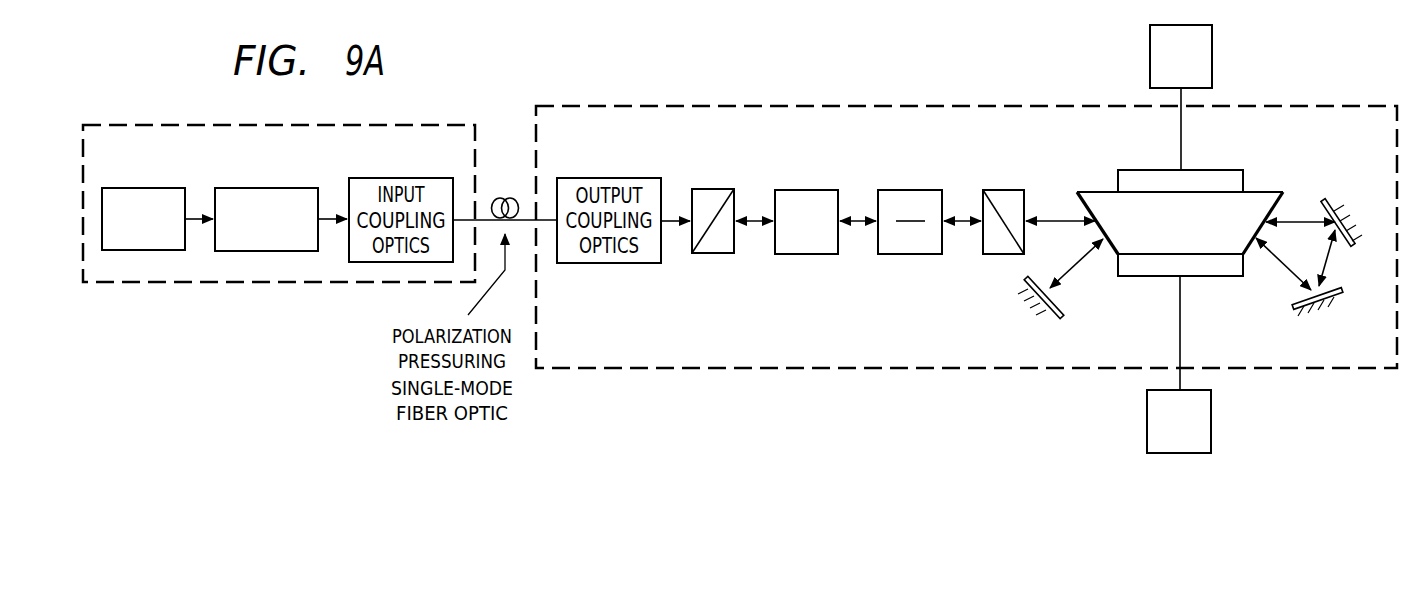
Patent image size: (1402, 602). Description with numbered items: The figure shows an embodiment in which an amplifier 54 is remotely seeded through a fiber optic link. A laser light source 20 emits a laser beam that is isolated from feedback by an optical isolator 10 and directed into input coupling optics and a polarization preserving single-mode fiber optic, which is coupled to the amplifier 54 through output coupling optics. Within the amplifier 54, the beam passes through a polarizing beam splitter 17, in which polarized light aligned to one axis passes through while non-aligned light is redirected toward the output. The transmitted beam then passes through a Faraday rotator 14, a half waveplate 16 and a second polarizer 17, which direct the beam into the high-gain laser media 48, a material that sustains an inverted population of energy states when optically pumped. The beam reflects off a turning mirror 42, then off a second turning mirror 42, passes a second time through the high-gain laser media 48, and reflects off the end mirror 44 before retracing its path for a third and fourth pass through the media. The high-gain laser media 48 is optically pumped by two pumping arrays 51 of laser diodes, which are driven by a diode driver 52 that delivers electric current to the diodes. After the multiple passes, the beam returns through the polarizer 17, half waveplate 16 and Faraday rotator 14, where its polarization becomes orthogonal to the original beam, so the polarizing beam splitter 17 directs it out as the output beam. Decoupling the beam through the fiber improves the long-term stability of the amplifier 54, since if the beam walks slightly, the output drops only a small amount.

The laser light source 20 is at (138, 187).
The optical isolator 10 is at (267, 187).
The polarizing beam splitter 17 is at (707, 188).
The Faraday rotator 14 is at (800, 190).
The half waveplate 16 is at (913, 190).
The amplifier 54 is at (967, 105).
The high-gain laser media 48 is at (1168, 234).
The pumping arrays 51 is at (1225, 178).
The diode driver 52 is at (1212, 55).
The end mirror 44 is at (1023, 308).
The turning mirror 42 is at (1350, 207).